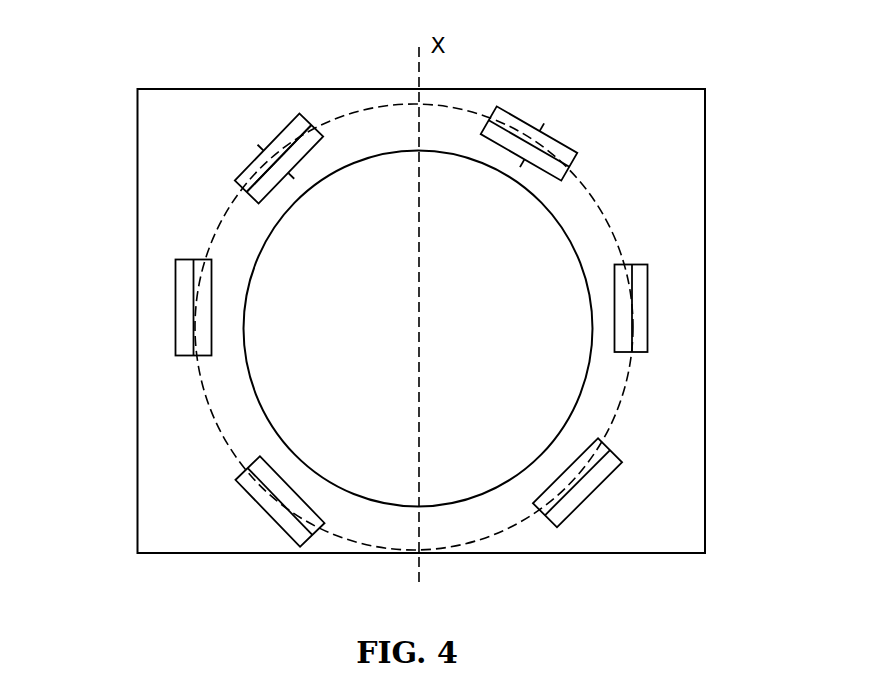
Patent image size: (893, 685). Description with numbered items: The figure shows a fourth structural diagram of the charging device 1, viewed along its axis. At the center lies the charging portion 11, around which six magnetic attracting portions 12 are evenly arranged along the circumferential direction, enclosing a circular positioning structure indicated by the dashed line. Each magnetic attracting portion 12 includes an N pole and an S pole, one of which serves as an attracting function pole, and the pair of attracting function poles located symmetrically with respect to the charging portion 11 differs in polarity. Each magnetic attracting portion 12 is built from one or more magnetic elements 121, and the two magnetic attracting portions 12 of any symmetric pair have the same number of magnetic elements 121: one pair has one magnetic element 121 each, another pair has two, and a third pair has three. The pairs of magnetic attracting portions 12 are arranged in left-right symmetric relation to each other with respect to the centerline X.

The charging device 1 is at (124, 75).
The charging portion 11 is at (565, 253).
The magnetic attracting portion 12 is at (563, 162).
The magnetic element 121 is at (243, 172).